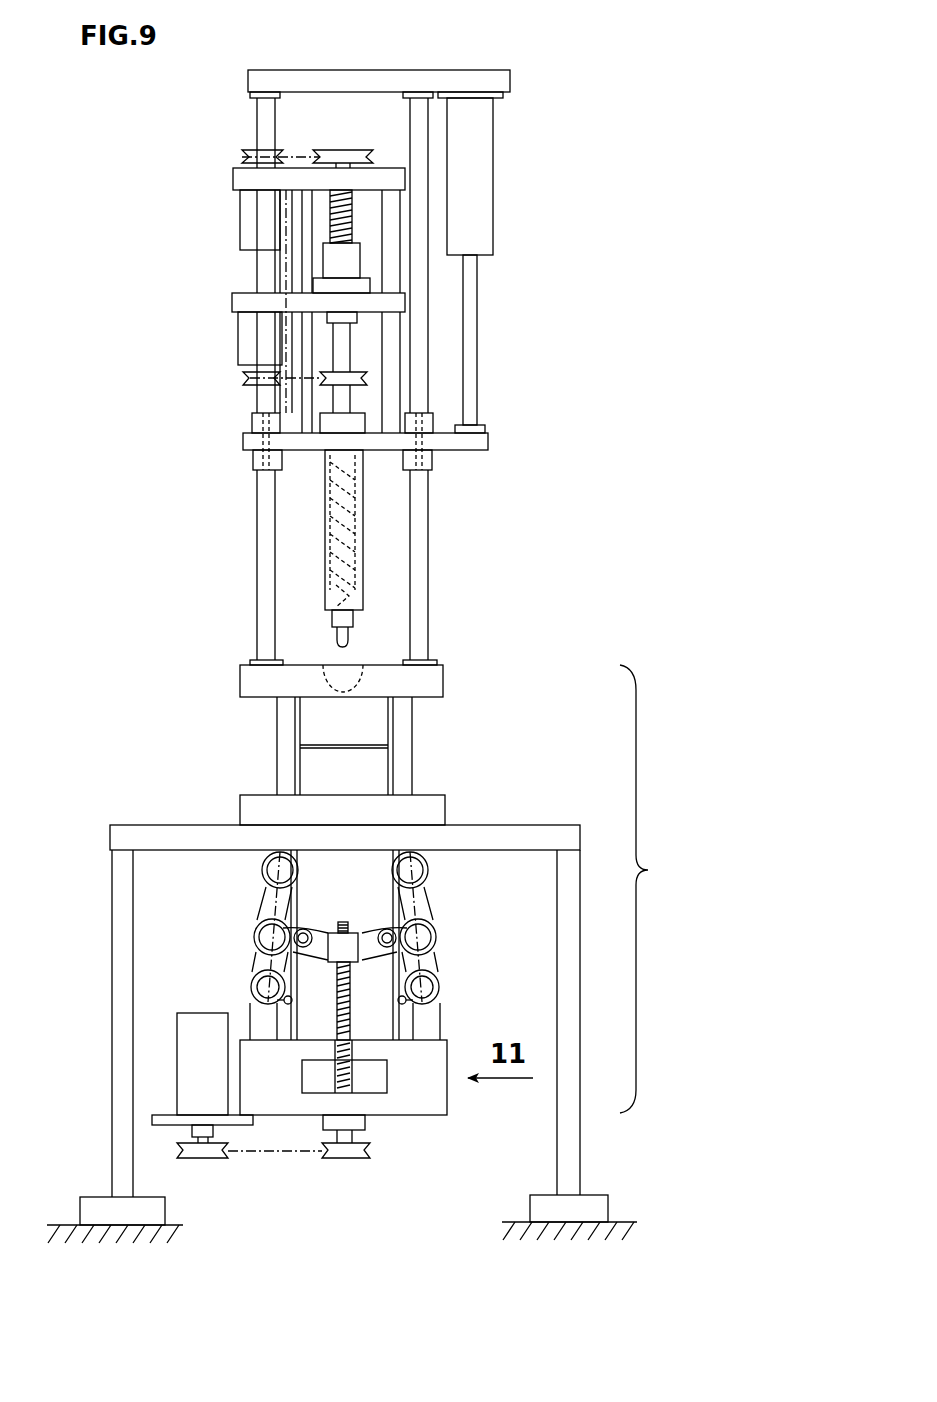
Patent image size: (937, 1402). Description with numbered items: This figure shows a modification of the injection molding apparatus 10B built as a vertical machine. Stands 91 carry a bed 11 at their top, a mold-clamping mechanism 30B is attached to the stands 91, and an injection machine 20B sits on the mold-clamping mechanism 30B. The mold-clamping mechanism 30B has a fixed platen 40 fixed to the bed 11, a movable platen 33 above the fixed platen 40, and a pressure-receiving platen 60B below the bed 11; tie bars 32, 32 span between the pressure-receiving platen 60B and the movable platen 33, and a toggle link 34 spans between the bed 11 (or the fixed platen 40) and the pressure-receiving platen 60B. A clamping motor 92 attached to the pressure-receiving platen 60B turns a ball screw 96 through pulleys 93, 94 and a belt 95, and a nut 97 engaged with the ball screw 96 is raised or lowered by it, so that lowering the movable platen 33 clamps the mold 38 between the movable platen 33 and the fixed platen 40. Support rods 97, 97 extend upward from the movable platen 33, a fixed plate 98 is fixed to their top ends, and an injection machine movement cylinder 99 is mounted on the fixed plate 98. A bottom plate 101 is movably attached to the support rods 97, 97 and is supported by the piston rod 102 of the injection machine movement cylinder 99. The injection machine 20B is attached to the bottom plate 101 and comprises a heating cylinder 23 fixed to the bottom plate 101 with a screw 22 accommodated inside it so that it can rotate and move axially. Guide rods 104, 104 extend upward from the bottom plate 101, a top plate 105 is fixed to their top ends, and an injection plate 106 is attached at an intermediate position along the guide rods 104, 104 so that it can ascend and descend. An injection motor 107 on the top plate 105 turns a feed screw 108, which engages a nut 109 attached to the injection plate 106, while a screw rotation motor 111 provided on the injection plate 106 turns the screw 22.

The fixed plate 98 is at (341, 76).
The injection machine movement cylinder 99 is at (480, 160).
The piston rod 102 is at (470, 387).
The support rod 97 is at (266, 630).
The top plate 105 is at (241, 182).
The injection motor 107 is at (247, 222).
The guide rod 104 is at (300, 272).
The injection plate 106 is at (234, 305).
The screw rotation motor 111 is at (247, 345).
The feed screw 108 is at (353, 207).
The nut 109 is at (352, 253).
The bottom plate 101 is at (482, 441).
The injection molding apparatus 10B is at (135, 505).
The injection machine 20B is at (370, 532).
The screw 22 is at (332, 505).
The heating cylinder 23 is at (327, 566).
The movable platen 33 is at (250, 683).
The tie bar 32 is at (285, 729).
The mold 38 is at (318, 771).
The fixed platen 40 is at (250, 810).
The bed 11 is at (510, 838).
The stand 91 is at (122, 937).
The toggle link 34 is at (268, 897).
The ball screw 96 is at (338, 1010).
The clamping motor 92 is at (193, 1062).
The pulley 93 is at (183, 1158).
The belt 95 is at (263, 1152).
The pulley 94 is at (332, 1158).
The pressure-receiving platen 60B is at (405, 1118).
The mold-clamping mechanism 30B is at (648, 870).